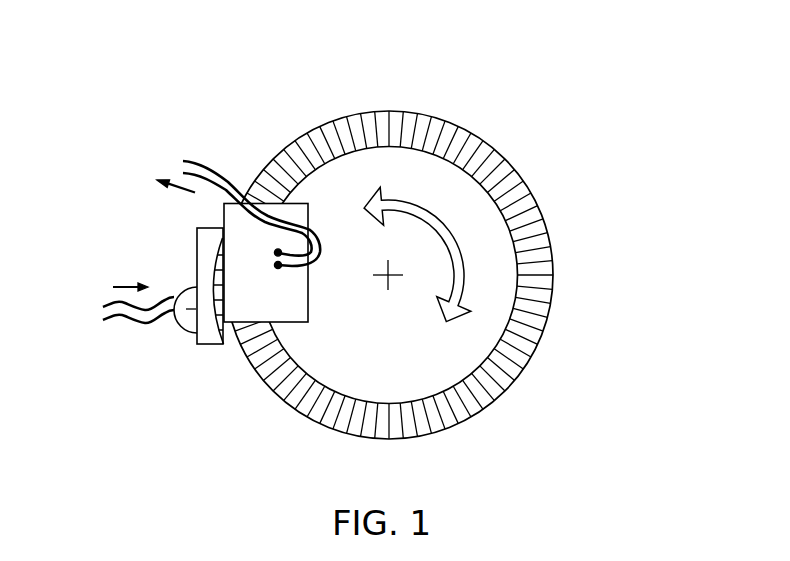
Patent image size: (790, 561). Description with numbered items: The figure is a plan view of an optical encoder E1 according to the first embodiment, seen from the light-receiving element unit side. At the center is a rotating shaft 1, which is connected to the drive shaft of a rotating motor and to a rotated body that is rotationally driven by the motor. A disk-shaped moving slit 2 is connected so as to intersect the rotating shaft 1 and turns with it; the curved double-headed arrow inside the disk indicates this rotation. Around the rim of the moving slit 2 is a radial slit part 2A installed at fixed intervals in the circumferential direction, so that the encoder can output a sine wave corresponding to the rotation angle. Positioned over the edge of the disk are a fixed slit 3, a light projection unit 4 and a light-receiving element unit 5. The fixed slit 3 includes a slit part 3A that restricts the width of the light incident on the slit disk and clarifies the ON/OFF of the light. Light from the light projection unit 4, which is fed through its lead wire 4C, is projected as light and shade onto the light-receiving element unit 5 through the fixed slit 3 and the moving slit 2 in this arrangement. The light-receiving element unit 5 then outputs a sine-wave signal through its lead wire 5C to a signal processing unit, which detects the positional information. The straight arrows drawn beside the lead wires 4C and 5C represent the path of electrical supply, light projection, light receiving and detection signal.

The rotating shaft 1 is at (390, 278).
The moving slit 2 is at (521, 373).
The slit part 2A is at (537, 292).
The fixed slit 3 is at (197, 332).
The slit part 3A is at (230, 327).
The light projection unit 4 is at (173, 322).
The lead wire 4C is at (103, 305).
The light-receiving element unit 5 is at (224, 213).
The lead wire 5C is at (198, 159).
The optical encoder E1 is at (542, 110).